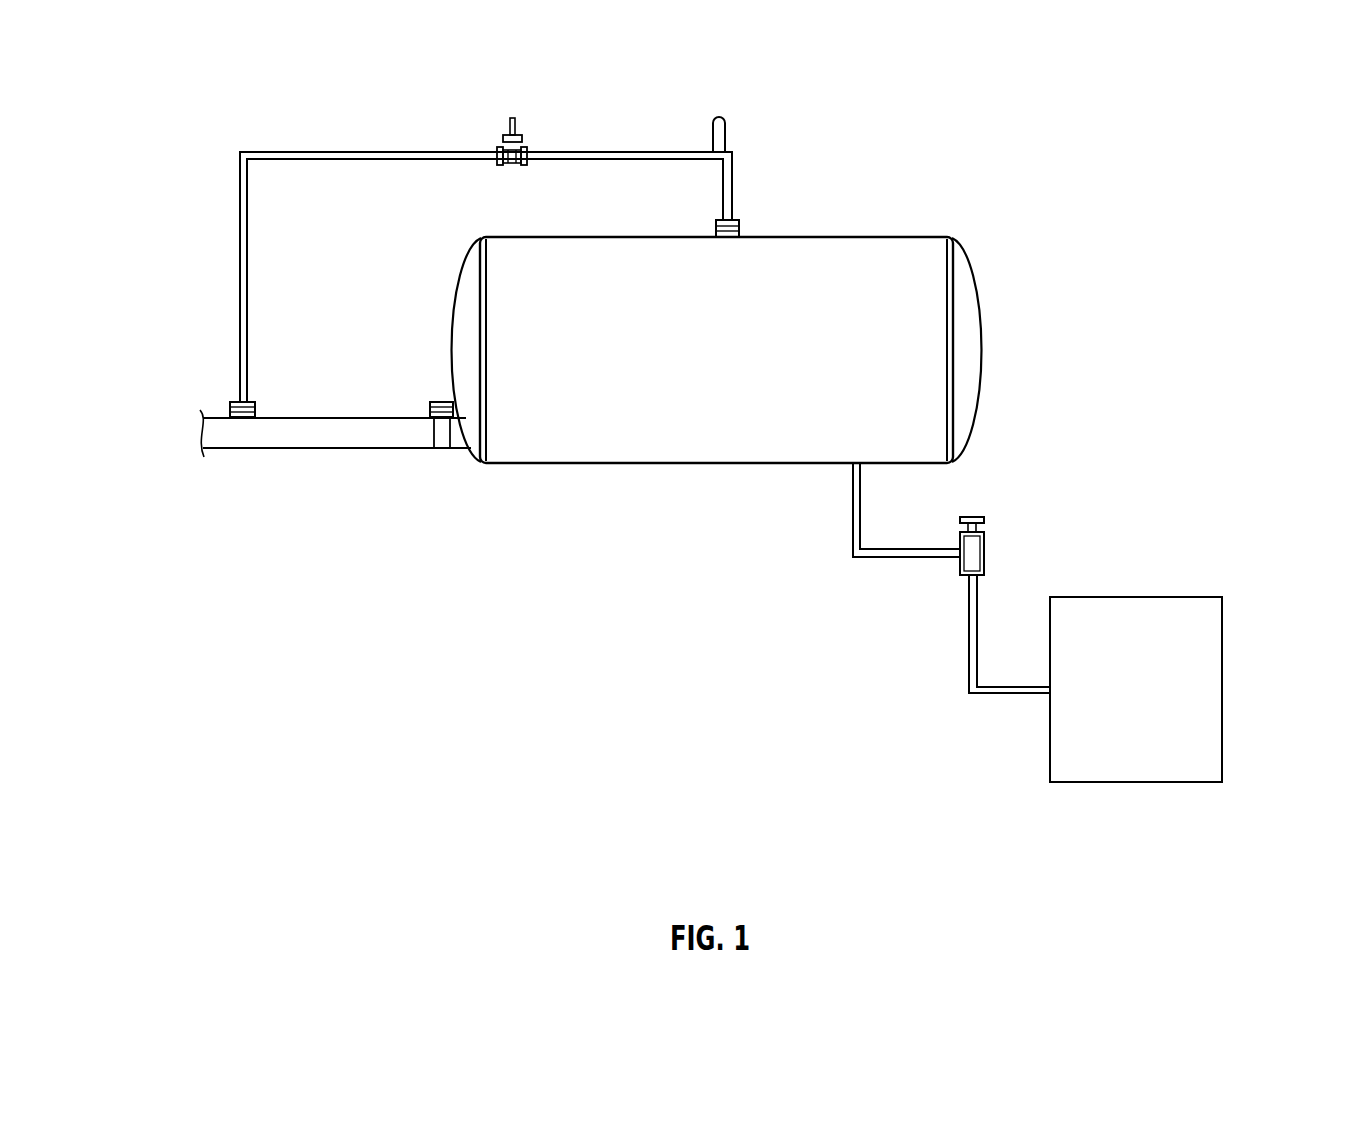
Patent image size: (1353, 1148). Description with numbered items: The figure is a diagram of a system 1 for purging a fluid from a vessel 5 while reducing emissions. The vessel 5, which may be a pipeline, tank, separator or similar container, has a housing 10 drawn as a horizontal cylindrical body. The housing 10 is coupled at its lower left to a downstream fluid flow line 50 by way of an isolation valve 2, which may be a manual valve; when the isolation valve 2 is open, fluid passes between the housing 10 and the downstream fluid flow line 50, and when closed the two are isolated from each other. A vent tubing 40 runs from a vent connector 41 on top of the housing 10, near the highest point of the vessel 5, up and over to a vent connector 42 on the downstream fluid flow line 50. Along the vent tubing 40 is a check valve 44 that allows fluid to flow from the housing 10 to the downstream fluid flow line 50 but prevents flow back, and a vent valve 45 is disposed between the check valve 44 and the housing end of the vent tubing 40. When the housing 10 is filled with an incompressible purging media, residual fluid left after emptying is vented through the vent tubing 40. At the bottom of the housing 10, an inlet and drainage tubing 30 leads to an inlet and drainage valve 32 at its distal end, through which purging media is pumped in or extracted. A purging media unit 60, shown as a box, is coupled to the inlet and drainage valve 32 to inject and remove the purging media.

The system 1 is at (162, 114).
The isolation valve 2 is at (430, 404).
The vessel 5 is at (497, 548).
The housing 10 is at (590, 464).
The inlet and drainage tubing 30 is at (878, 558).
The inlet and drainage valve 32 is at (985, 522).
The vent tubing 40 is at (357, 150).
The vent connector 41 is at (740, 222).
The vent connector 42 is at (257, 404).
The check valve 44 is at (507, 135).
The vent valve 45 is at (718, 117).
The downstream fluid flow line 50 is at (262, 450).
The purging media unit 60 is at (1222, 690).